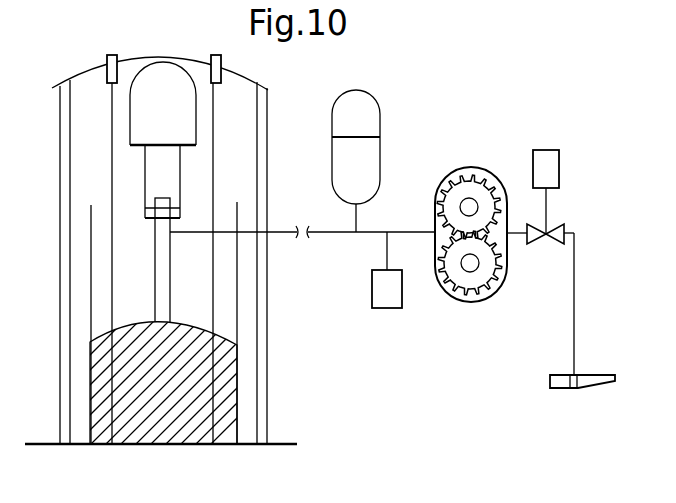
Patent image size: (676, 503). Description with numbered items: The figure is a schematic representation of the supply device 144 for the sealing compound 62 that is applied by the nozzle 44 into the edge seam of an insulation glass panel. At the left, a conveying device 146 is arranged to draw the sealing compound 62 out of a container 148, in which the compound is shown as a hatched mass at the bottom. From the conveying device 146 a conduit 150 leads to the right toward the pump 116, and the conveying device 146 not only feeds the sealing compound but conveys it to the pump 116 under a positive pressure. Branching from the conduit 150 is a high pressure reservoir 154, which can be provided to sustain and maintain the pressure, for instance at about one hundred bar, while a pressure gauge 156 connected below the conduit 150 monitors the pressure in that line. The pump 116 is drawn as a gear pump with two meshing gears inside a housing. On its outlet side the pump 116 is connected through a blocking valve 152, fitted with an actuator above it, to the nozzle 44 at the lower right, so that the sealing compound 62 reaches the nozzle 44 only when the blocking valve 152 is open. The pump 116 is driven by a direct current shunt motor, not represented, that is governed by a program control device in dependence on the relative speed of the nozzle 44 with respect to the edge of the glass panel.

The supply device 144 is at (496, 60).
The conveying device 146 is at (165, 78).
The container 148 is at (237, 315).
The conduit 150 is at (277, 230).
The blocking valve 152 is at (548, 232).
The high pressure reservoir 154 is at (368, 113).
The pressure gauge 156 is at (383, 308).
The pump 116 is at (482, 155).
The sealing compound 62 is at (158, 435).
The nozzle 44 is at (550, 382).